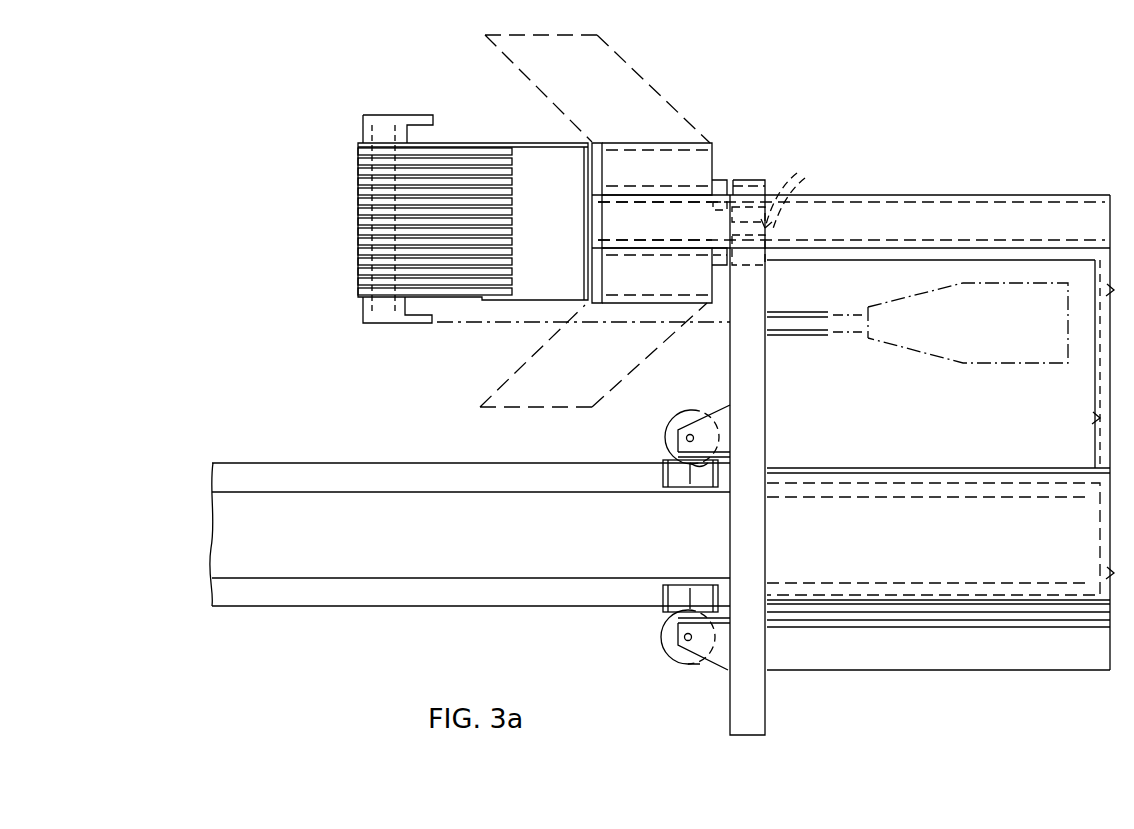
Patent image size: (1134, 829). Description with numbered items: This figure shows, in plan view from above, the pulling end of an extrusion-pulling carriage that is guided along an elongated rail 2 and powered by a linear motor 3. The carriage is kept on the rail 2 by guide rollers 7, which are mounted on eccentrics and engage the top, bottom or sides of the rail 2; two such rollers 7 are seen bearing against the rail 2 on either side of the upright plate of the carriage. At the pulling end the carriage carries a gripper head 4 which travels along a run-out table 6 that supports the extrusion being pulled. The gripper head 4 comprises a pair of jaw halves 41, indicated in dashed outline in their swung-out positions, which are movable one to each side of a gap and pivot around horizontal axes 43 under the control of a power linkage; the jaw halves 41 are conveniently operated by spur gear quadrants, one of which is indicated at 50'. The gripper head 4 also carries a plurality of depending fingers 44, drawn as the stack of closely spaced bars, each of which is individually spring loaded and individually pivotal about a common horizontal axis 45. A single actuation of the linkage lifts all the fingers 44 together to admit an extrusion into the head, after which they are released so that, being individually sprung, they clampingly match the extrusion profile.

The rail 2 is at (478, 598).
The linear motor 3 is at (923, 483).
The gripper head 4 is at (722, 135).
The run-out table 6 is at (255, 241).
The guide rollers 7 is at (663, 470).
The jaw halves 41 is at (623, 78).
The horizontal axes 43 is at (632, 197).
The fingers 44 is at (462, 163).
The common horizontal axis 45 is at (385, 125).
The hinge point 50' is at (794, 192).